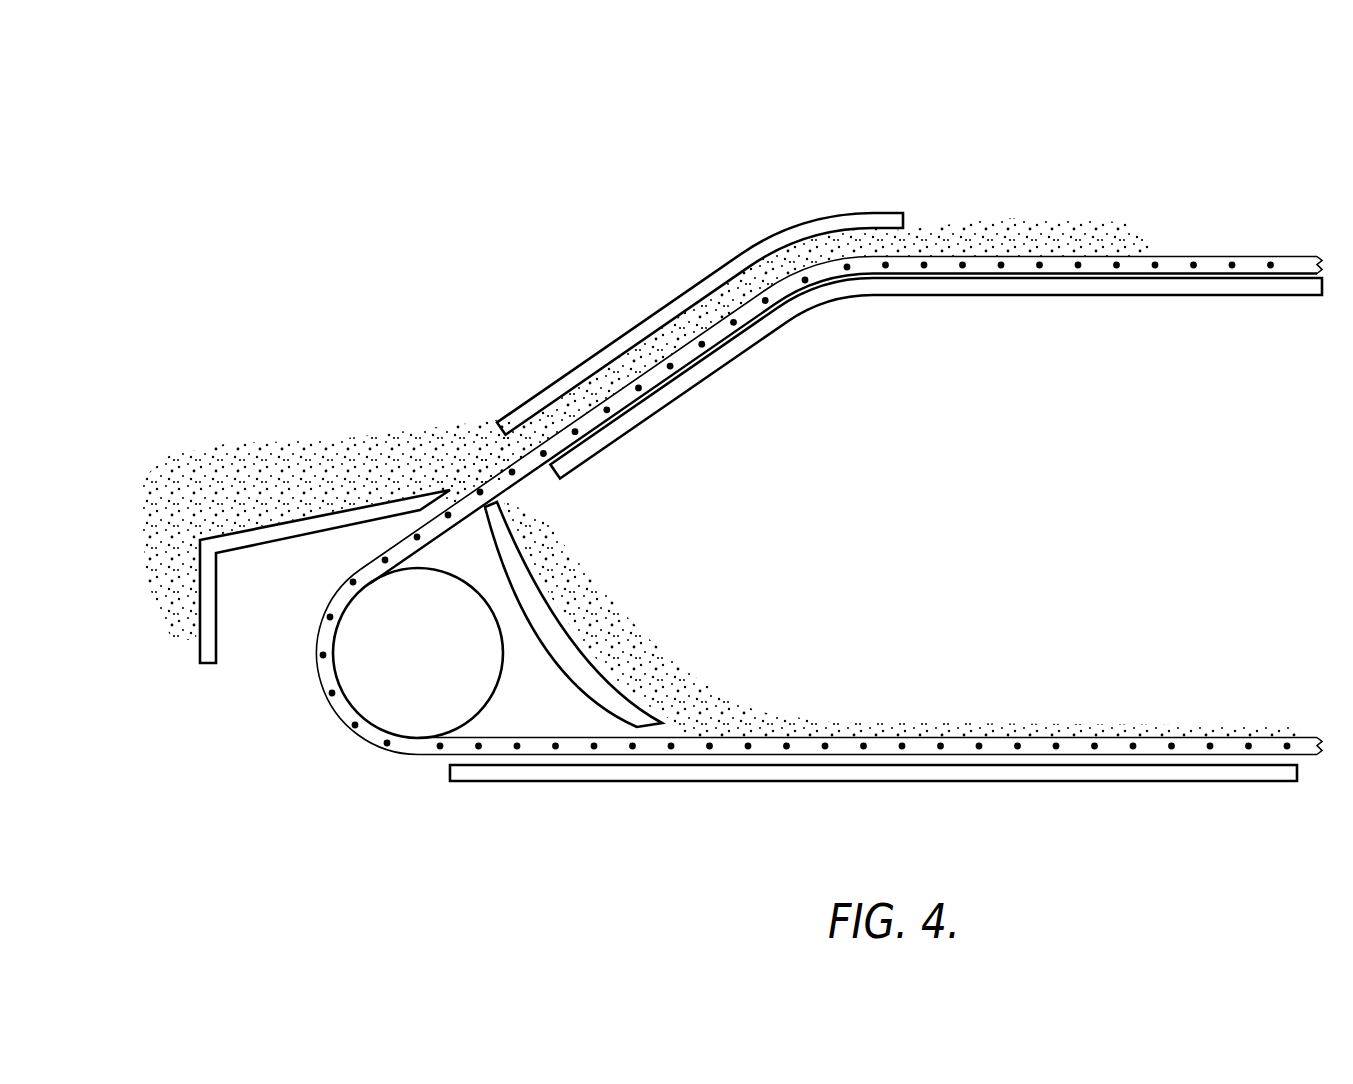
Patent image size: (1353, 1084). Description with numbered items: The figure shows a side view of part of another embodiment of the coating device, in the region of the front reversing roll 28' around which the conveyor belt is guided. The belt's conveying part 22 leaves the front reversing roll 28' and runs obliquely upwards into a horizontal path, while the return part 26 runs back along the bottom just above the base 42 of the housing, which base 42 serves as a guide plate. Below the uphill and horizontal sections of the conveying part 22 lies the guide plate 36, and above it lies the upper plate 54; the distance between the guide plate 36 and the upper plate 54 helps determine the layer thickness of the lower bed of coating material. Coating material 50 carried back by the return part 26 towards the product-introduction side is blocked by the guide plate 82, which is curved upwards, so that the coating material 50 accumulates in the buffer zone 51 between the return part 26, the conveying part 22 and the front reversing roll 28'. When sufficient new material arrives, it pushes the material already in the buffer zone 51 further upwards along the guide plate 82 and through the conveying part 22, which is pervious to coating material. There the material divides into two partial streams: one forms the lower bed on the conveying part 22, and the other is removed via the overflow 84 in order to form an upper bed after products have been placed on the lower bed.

The conveying part 22 is at (1251, 268).
The return part 26 is at (1193, 740).
The front reversing roll 28' is at (374, 679).
The guide plate 36 is at (1168, 284).
The base 42 is at (1107, 776).
The coating material 50 is at (970, 233).
The buffer zone 51 is at (631, 555).
The upper plate 54 is at (822, 220).
The guide plate 82 is at (603, 690).
The overflow 84 is at (210, 598).